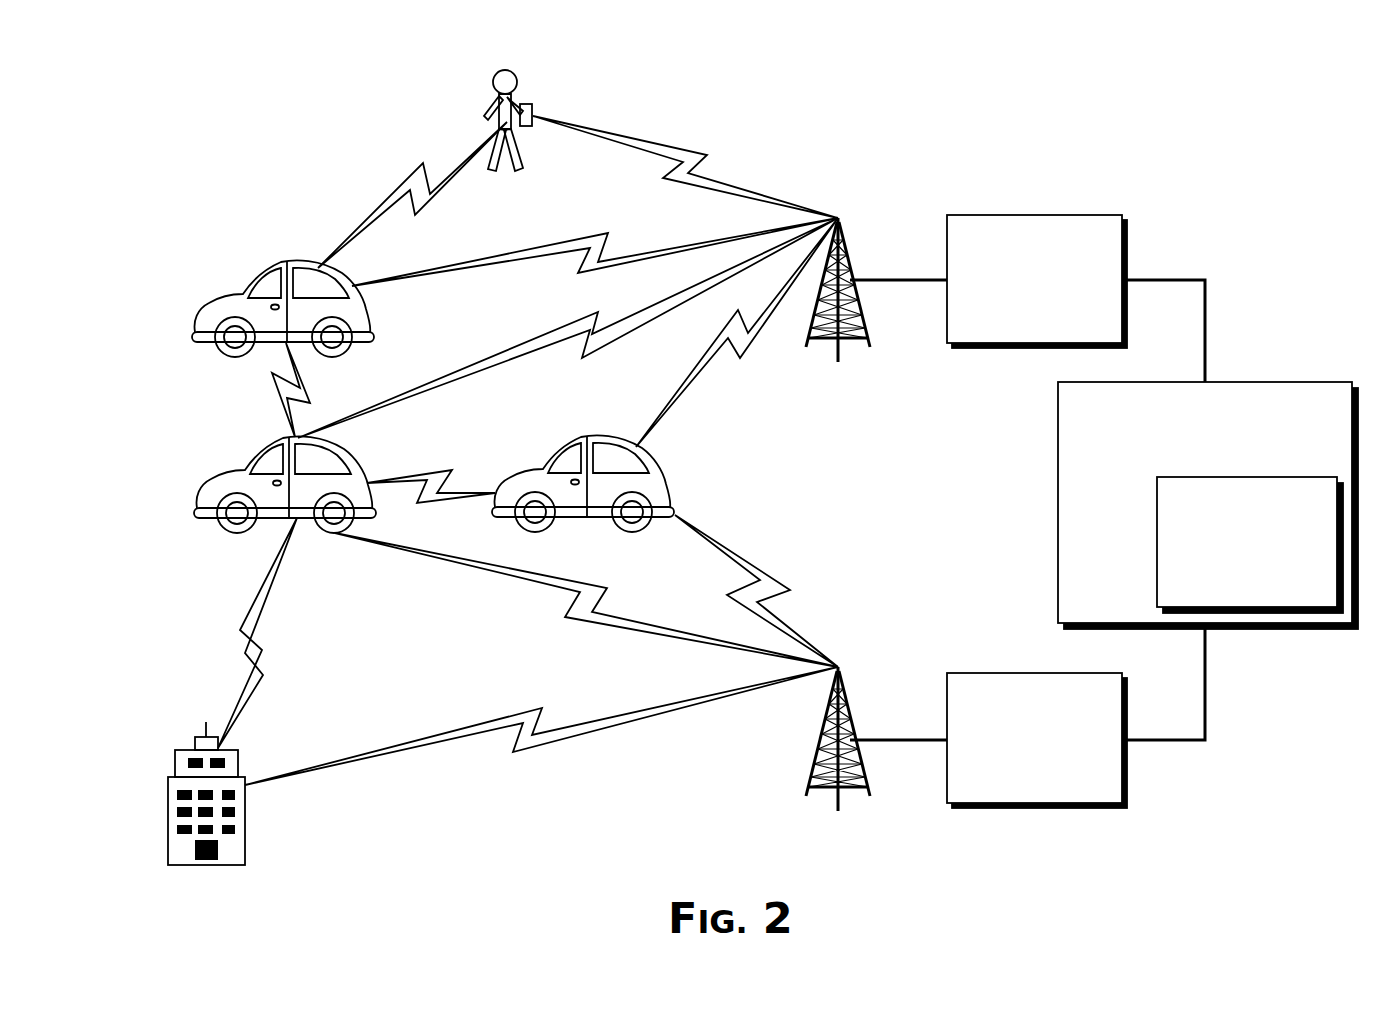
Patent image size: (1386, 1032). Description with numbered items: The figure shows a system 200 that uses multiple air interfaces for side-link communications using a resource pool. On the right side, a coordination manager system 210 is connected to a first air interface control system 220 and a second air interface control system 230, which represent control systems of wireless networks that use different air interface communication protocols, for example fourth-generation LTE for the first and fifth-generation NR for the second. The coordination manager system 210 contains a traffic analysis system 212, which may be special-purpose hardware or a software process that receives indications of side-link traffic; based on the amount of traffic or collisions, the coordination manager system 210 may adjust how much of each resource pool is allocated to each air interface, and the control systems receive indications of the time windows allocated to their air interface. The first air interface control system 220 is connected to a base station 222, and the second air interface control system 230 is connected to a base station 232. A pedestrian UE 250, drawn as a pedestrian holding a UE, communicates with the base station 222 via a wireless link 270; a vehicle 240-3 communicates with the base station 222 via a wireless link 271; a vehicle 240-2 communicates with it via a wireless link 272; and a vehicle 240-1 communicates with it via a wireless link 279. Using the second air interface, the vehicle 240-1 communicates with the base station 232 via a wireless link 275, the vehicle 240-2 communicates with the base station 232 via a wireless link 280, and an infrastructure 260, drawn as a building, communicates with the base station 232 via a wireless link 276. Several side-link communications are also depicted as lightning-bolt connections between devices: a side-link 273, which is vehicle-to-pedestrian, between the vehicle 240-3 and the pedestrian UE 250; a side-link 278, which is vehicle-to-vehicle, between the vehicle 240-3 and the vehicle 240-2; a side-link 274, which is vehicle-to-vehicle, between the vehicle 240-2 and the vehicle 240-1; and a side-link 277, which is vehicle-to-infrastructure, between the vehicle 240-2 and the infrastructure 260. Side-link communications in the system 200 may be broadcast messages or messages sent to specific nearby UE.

The system 200 is at (165, 133).
The coordination manager system 210 is at (1315, 381).
The traffic analysis system 212 is at (1288, 602).
The first air interface control system 220 is at (964, 215).
The base station 222 is at (851, 343).
The second air interface control system 230 is at (967, 673).
The base station 232 is at (820, 772).
The vehicle 240-1 is at (535, 448).
The vehicle 240-2 is at (198, 490).
The vehicle 240-3 is at (244, 297).
The pedestrian UE 250 is at (502, 69).
The infrastructure 260 is at (181, 748).
The wireless link 270 is at (690, 153).
The wireless link 271 is at (594, 240).
The wireless link 272 is at (569, 338).
The side-link 273 is at (402, 172).
The side-link 274 is at (442, 505).
The wireless link 275 is at (703, 538).
The wireless link 276 is at (530, 708).
The side-link 277 is at (240, 630).
The side-link 278 is at (273, 390).
The wireless link 279 is at (688, 378).
The wireless link 280 is at (398, 548).